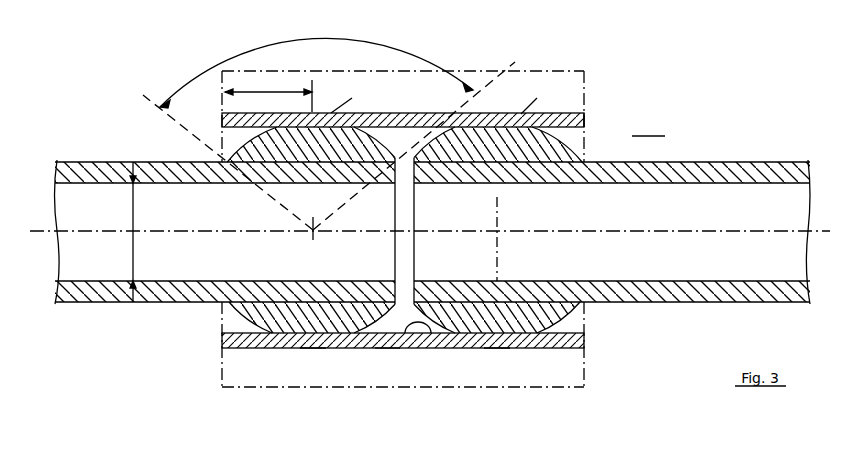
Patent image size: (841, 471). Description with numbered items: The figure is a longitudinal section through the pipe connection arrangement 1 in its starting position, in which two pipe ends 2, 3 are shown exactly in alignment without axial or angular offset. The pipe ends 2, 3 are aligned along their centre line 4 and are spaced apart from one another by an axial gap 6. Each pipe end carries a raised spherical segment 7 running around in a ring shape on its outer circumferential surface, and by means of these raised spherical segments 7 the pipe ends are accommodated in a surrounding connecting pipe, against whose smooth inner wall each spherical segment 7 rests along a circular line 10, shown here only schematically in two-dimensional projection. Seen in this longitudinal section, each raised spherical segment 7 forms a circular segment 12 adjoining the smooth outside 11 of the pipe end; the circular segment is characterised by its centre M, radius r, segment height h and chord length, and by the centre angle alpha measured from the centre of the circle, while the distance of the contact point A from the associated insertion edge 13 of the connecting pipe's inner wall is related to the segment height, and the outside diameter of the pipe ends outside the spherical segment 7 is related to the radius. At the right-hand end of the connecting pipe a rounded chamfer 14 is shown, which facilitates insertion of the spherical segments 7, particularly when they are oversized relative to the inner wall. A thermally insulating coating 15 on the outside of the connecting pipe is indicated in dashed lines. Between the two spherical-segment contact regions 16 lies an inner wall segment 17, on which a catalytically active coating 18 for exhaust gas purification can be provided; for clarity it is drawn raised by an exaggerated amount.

The pipe connection arrangement 1 is at (430, 219).
The pipe end 2 is at (433, 261).
The pipe end 3 is at (752, 161).
The centre line 4 is at (100, 234).
The axial gap 6 is at (412, 245).
The raised spherical segment 7 is at (372, 282).
The circular line 10 is at (496, 198).
The smooth outside 11 is at (163, 304).
The circular segment 12 is at (272, 316).
The insertion edge 13 is at (417, 254).
The chamfer 14 is at (586, 118).
The thermally insulating coating 15 is at (561, 58).
The spherical-segment contact region 16 is at (314, 348).
The inner wall segment 17 is at (388, 348).
The catalytically active coating 18 is at (436, 348).